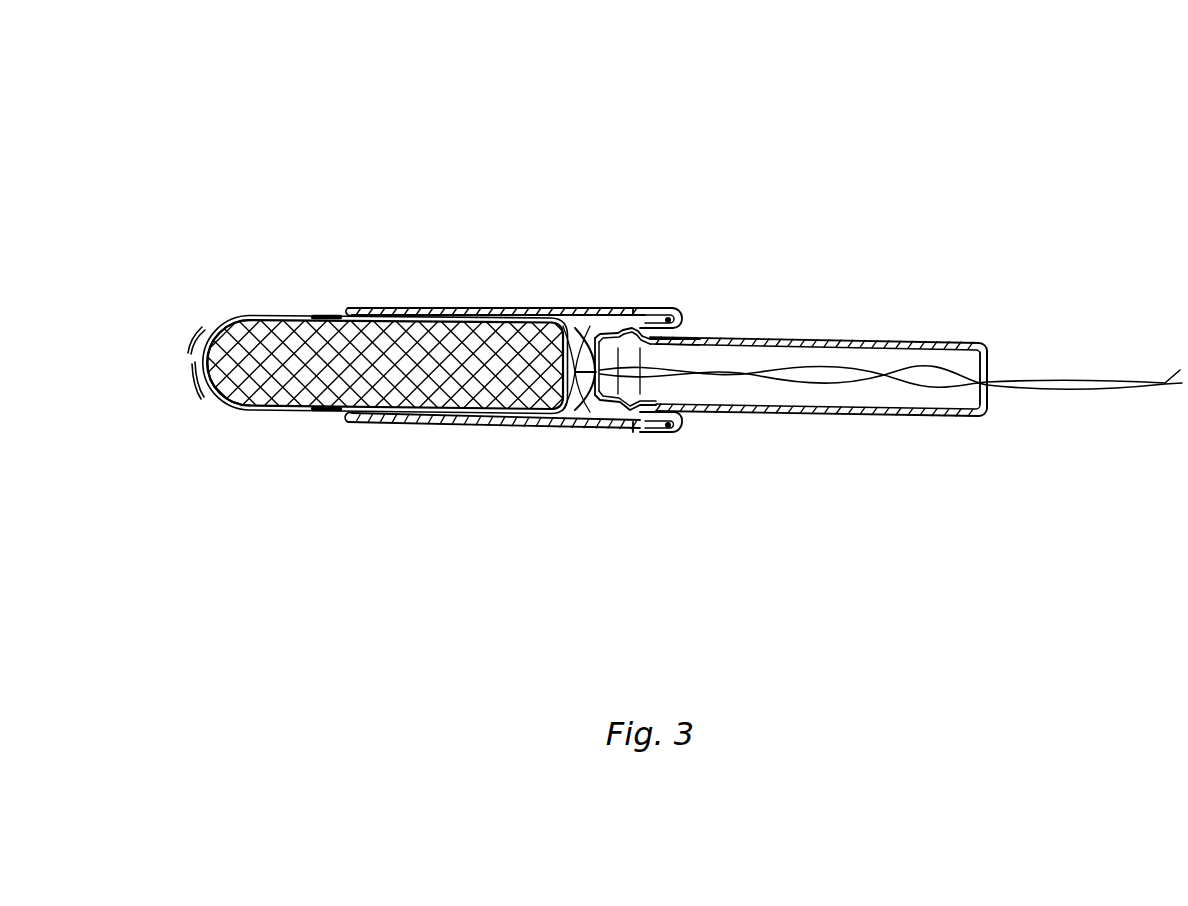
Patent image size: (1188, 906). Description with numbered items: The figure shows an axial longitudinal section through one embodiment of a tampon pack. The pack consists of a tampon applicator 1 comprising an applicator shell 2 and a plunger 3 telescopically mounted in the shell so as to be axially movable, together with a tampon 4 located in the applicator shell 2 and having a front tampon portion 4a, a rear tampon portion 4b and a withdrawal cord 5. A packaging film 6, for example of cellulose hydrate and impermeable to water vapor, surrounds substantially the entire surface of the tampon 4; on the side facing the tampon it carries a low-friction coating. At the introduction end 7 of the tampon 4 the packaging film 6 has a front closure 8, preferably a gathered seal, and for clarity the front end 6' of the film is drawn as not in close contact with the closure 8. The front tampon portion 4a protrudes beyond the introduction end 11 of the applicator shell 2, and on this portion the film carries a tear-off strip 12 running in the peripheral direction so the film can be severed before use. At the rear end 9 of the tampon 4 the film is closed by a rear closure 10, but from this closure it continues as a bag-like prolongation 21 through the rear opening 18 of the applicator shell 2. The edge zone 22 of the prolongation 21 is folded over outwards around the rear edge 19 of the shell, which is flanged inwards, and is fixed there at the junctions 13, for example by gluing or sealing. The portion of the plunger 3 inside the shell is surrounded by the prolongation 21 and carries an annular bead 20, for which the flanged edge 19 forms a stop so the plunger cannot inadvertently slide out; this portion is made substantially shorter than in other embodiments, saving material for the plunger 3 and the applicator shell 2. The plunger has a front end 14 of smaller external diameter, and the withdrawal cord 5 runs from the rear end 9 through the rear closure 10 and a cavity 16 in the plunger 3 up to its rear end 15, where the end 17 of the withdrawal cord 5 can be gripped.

The tampon applicator 1 is at (771, 405).
The applicator shell 2 is at (457, 307).
The plunger 3 is at (830, 343).
The tampon 4 is at (378, 408).
The front tampon portion 4a is at (248, 375).
The rear tampon portion 4b is at (486, 372).
The withdrawal cord 5 is at (835, 375).
The packaging film 6 is at (397, 362).
The front end of the packaging film 6' is at (203, 242).
The introduction end of the tampon 7 is at (218, 397).
The front closure 8 is at (193, 372).
The rear end of the tampon 9 is at (572, 375).
The rear closure 10 is at (582, 345).
The introduction end of the applicator shell 11 is at (352, 306).
The tear-off strip 12 is at (327, 314).
The junctions 13 is at (630, 410).
The front end of the plunger 14 is at (597, 395).
The rear end of the plunger 15 is at (987, 350).
The cavity 16 is at (938, 397).
The end of the withdrawal cord 17 is at (1175, 385).
The rear opening of the applicator shell 18 is at (700, 336).
The rear edge of the applicator shell 19 is at (671, 318).
The annular bead 20 is at (636, 330).
The bag-like prolongation 21 is at (612, 322).
The edge zone 22 is at (684, 317).